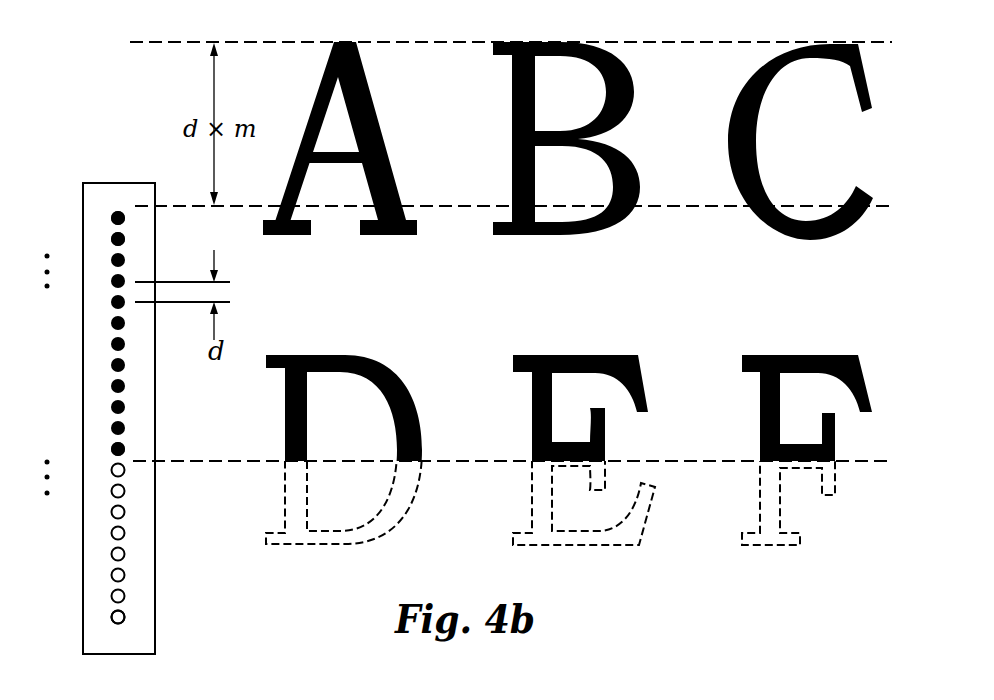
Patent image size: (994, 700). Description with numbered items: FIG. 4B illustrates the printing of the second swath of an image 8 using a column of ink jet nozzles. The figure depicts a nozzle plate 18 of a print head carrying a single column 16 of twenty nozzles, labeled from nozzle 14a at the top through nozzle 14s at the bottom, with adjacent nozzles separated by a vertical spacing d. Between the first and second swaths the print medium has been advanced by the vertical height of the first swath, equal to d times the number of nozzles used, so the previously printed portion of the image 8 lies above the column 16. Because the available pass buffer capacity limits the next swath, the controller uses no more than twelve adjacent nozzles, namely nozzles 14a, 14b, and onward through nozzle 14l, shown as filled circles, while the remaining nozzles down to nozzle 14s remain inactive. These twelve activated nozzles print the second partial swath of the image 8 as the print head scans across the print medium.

The image 8 is at (692, 40).
The nozzle 14a is at (112, 214).
The nozzle 14b is at (112, 236).
The nozzle 14l is at (112, 449).
The nozzle 14s is at (112, 617).
The column 16 is at (118, 200).
The nozzle plate 18 is at (155, 572).